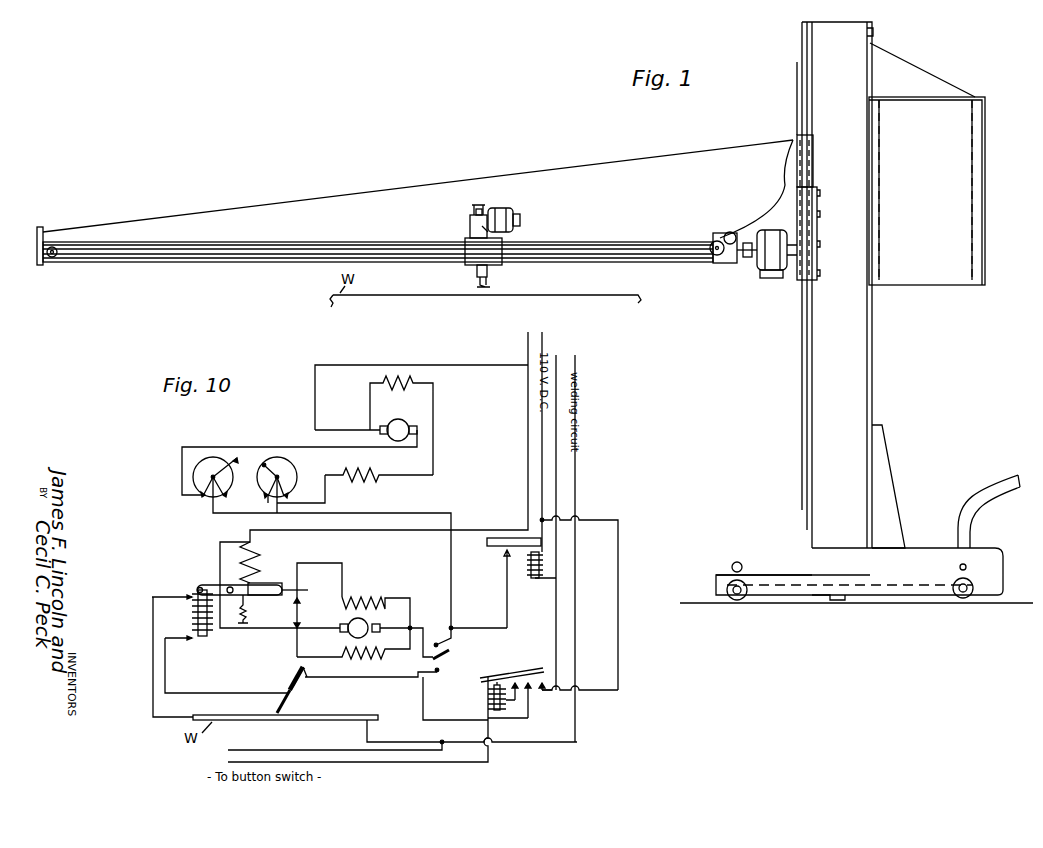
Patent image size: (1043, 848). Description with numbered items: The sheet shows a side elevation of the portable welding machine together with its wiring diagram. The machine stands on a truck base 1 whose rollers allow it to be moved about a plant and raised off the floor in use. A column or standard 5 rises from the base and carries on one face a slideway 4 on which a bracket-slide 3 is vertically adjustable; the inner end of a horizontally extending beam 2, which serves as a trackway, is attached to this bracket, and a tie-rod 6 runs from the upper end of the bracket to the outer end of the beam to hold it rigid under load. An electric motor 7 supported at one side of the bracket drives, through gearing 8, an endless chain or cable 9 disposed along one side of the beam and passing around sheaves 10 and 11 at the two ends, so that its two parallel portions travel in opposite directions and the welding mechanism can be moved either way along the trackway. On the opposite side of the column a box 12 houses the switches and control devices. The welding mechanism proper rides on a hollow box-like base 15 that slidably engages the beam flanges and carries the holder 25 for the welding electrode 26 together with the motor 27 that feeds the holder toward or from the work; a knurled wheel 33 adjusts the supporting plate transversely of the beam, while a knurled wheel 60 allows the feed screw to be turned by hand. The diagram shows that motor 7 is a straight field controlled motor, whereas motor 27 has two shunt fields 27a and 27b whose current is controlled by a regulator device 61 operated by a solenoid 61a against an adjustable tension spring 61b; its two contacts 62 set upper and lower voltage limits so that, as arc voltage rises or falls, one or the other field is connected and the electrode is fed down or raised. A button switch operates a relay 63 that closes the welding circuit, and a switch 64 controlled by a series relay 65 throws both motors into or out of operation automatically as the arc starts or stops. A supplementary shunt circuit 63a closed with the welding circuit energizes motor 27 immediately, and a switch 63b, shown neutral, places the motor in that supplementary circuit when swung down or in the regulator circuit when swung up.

In FIG. 1, the truck base 1 is at (765, 573).
In FIG. 1, the beam 2 is at (328, 240).
In FIG. 1, the bracket-slide 3 is at (795, 205).
In FIG. 1, the slideway 4 is at (802, 350).
In FIG. 1, the column 5 is at (872, 353).
In FIG. 1, the tie-rod 6 is at (585, 163).
In FIG. 1, the electric motor 7 is at (770, 233).
In FIG. 10, the electric motor 7 is at (410, 426).
In FIG. 1, the gearing 8 is at (721, 233).
In FIG. 1, the endless cable 9 is at (250, 245).
In FIG. 1, the sheave 10 is at (717, 258).
In FIG. 1, the sheave 11 is at (47, 262).
In FIG. 1, the box 12 is at (985, 180).
In FIG. 1, the base 15 is at (493, 248).
In FIG. 1, the electrode holder 25 is at (493, 278).
In FIG. 10, the electrode holder 25 is at (307, 680).
In FIG. 1, the welding electrode 26 is at (477, 278).
In FIG. 10, the welding electrode 26 is at (297, 680).
In FIG. 1, the motor 27 is at (505, 208).
In FIG. 10, the motor 27 is at (368, 622).
In FIG. 10, the shunt field 27a is at (350, 600).
In FIG. 10, the shunt field 27b is at (360, 660).
In FIG. 1, the knurled wheel 33 is at (480, 204).
In FIG. 1, the knurled wheel 60 is at (472, 212).
In FIG. 10, the regulator device 61 is at (272, 588).
In FIG. 10, the solenoid 61a is at (192, 610).
In FIG. 10, the adjustable tension spring 61b is at (238, 610).
In FIG. 10, the contacts 62 is at (291, 579).
In FIG. 10, the relay 63 is at (490, 702).
In FIG. 10, the supplementary shunt circuit 63a is at (533, 715).
In FIG. 10, the switch 63b is at (452, 655).
In FIG. 10, the switch 64 is at (518, 547).
In FIG. 10, the series relay 65 is at (545, 562).